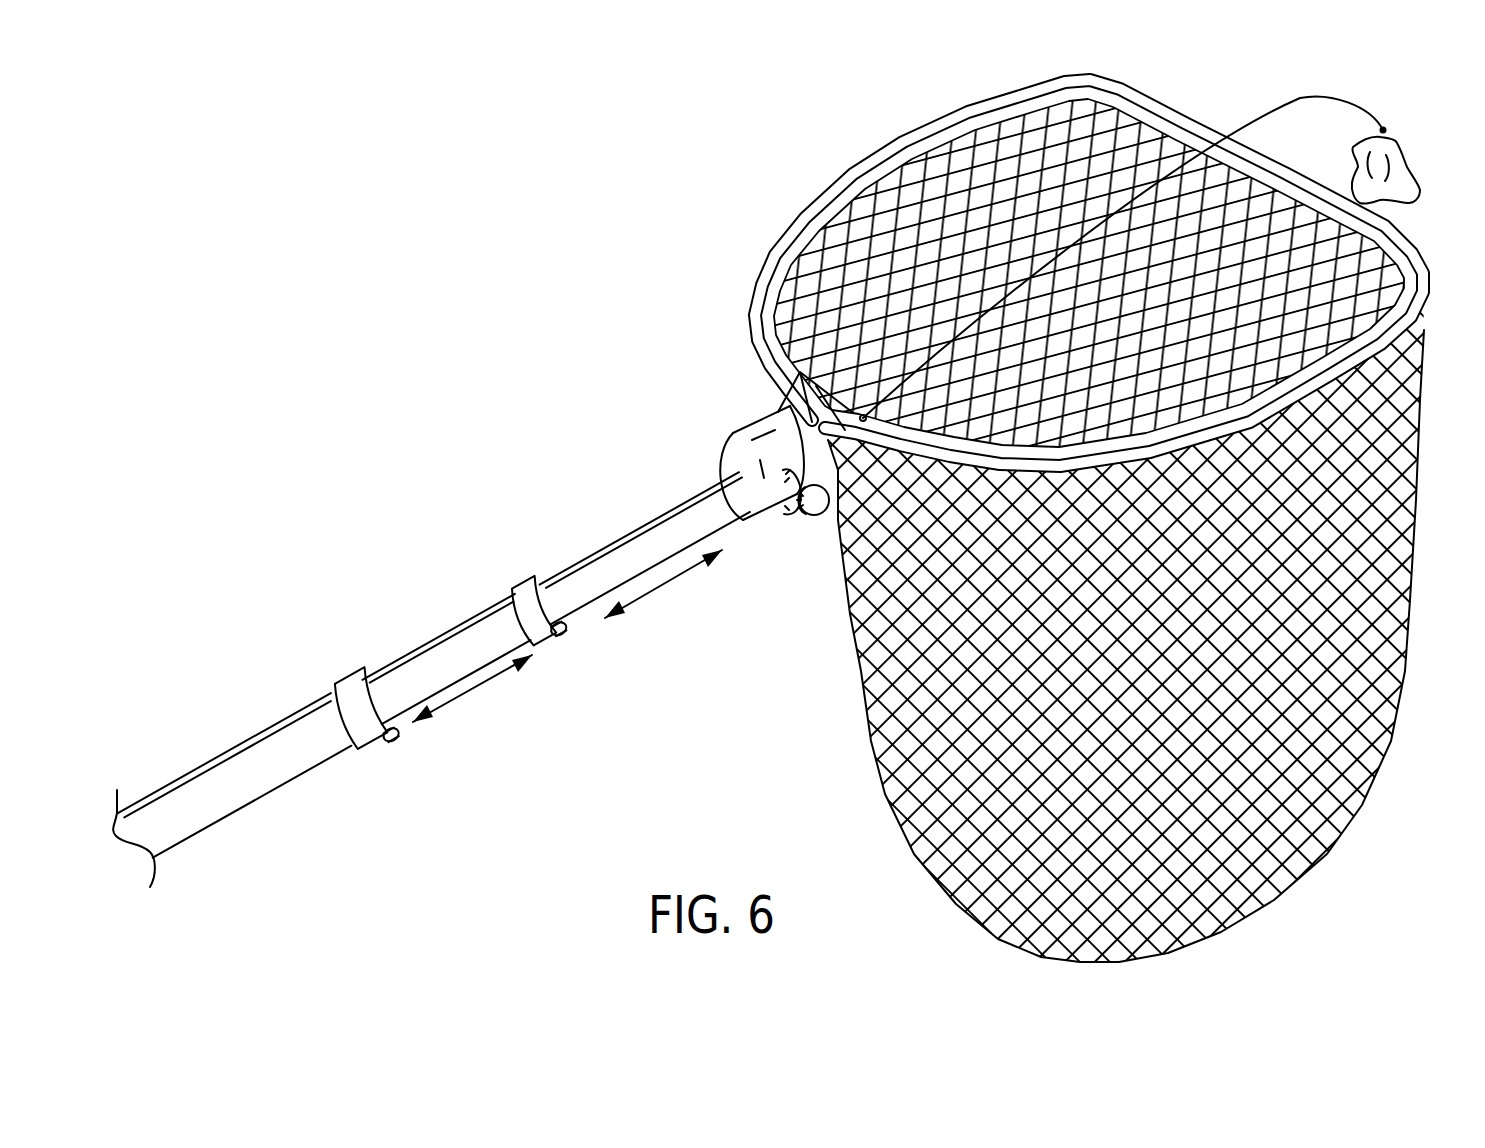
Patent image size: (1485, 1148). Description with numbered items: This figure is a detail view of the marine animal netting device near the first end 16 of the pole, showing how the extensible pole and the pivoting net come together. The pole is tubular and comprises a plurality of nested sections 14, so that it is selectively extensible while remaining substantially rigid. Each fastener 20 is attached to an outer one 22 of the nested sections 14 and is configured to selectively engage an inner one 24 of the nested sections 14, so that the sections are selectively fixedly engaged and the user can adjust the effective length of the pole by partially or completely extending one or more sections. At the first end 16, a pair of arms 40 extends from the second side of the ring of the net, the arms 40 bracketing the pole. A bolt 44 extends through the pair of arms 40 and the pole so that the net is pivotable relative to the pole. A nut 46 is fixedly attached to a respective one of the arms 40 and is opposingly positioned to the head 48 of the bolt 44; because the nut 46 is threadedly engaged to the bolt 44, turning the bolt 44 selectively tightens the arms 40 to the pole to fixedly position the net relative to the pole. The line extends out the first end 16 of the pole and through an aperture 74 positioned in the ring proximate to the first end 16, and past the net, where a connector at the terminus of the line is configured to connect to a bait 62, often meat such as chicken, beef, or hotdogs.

The nested sections 14 is at (451, 684).
The first end 16 is at (853, 413).
The fastener 20 is at (537, 795).
The outer one of the nested sections 22 is at (250, 737).
The inner one of the nested sections 24 is at (468, 622).
The arms 40 is at (762, 448).
The bolt 44 is at (778, 437).
The nut 46 is at (738, 450).
The head 48 is at (813, 528).
The bait 62 is at (1413, 177).
The aperture 74 is at (808, 522).